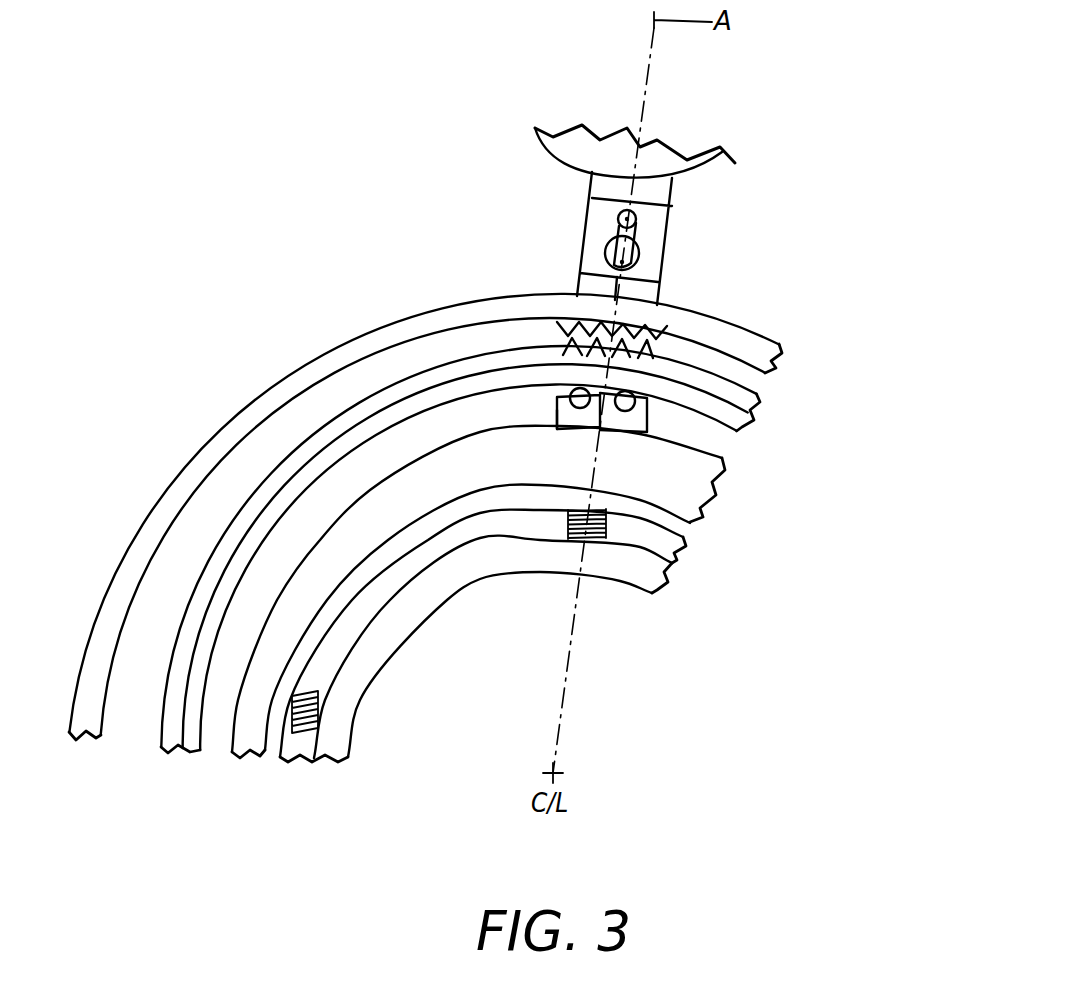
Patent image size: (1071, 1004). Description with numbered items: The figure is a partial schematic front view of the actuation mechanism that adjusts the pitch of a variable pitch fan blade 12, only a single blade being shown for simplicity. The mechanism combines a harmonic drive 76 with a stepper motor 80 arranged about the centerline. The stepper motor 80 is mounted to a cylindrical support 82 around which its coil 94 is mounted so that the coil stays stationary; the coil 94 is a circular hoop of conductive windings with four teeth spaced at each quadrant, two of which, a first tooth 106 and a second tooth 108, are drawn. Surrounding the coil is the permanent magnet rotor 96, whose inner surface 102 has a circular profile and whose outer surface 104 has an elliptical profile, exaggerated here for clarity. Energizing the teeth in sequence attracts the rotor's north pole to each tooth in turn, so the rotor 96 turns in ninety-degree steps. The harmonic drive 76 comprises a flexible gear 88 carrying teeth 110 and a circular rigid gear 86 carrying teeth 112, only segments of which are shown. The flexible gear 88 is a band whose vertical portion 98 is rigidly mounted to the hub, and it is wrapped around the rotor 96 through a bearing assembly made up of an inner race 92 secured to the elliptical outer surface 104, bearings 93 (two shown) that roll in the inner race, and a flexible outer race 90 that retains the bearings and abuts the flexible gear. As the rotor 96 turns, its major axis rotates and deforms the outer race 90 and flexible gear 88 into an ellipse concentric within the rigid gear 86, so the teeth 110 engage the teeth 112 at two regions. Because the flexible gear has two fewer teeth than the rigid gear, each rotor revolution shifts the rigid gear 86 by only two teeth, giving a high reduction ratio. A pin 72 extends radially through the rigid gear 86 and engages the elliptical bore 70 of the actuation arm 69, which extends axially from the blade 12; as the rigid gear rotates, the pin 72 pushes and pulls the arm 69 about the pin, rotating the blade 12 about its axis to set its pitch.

The blade 12 is at (720, 162).
The actuation arm 69 is at (660, 224).
The bore 70 is at (640, 258).
The pin 72 is at (588, 232).
The harmonic drive 76 is at (118, 762).
The stepper motor 80 is at (271, 795).
The support 82 is at (656, 590).
The rigid gear 86 is at (780, 366).
The flexible gear 88 is at (757, 400).
The outer race 90 is at (748, 418).
The inner race 92 is at (647, 420).
The bearings 93 is at (558, 403).
The coil 94 is at (682, 553).
The rotor 96 is at (695, 490).
The vertical portion 98 is at (560, 432).
The inner surface 102 is at (268, 752).
The outer surface 104 is at (185, 748).
The first tooth 106 is at (322, 714).
The second tooth 108 is at (585, 541).
The teeth 110 is at (544, 346).
The teeth 112 is at (540, 325).